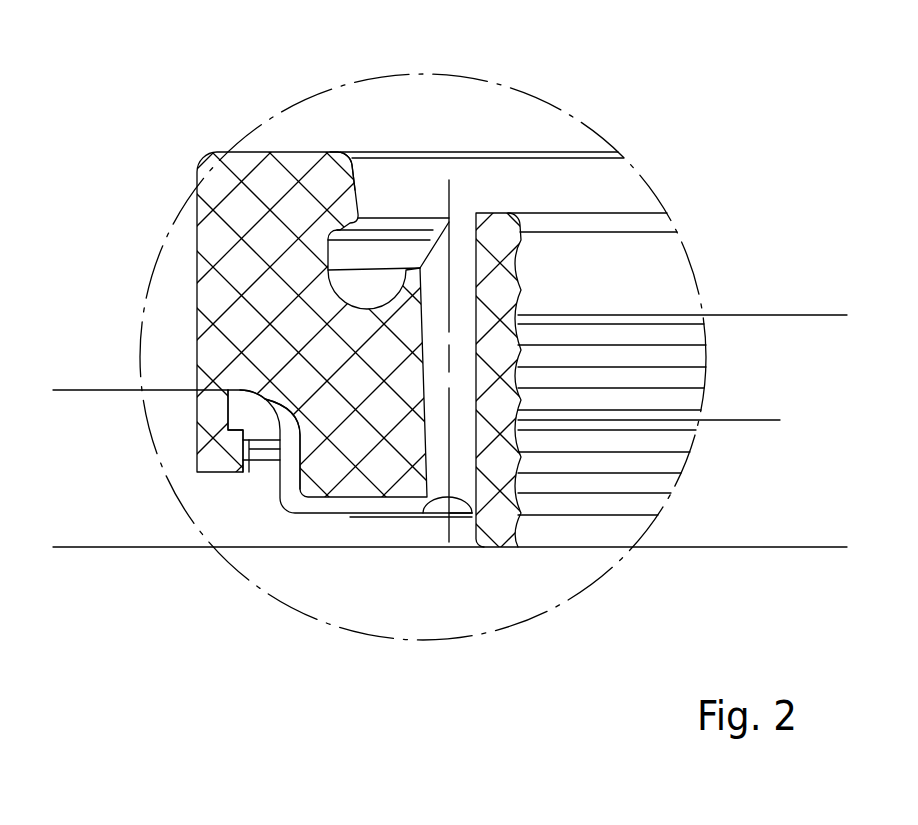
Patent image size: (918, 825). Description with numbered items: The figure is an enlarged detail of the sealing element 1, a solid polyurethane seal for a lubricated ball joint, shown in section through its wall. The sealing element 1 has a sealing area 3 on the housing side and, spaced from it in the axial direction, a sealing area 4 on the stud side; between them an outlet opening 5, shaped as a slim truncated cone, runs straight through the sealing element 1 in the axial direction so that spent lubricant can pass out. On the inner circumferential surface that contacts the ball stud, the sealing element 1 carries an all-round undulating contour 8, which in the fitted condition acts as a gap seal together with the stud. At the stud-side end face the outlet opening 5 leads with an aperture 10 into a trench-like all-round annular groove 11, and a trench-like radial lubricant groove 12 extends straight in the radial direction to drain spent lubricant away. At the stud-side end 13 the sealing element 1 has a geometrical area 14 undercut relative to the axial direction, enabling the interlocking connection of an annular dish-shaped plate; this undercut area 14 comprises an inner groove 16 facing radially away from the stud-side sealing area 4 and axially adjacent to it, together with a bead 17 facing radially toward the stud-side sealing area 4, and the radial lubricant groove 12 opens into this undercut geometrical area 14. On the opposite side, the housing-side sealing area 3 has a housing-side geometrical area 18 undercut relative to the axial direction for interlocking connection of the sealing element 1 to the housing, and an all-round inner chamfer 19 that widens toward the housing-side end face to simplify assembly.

The sealing element 1 is at (190, 241).
The housing-side sealing area 3 is at (421, 187).
The stud-side sealing area 4 is at (772, 420).
The outlet opening 5 is at (464, 216).
The undulating contour 8 is at (830, 315).
The aperture 10 is at (459, 519).
The annular groove 11 is at (432, 519).
The radial lubricant groove 12 is at (359, 518).
The stud-side end 13 is at (68, 391).
The stud-side undercut geometrical area 14 is at (249, 450).
The inner groove 16 is at (264, 456).
The bead 17 is at (242, 426).
The housing-side undercut geometrical area 18 is at (343, 239).
The inner chamfer 19 is at (353, 173).